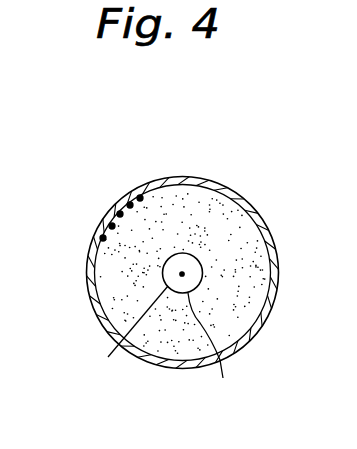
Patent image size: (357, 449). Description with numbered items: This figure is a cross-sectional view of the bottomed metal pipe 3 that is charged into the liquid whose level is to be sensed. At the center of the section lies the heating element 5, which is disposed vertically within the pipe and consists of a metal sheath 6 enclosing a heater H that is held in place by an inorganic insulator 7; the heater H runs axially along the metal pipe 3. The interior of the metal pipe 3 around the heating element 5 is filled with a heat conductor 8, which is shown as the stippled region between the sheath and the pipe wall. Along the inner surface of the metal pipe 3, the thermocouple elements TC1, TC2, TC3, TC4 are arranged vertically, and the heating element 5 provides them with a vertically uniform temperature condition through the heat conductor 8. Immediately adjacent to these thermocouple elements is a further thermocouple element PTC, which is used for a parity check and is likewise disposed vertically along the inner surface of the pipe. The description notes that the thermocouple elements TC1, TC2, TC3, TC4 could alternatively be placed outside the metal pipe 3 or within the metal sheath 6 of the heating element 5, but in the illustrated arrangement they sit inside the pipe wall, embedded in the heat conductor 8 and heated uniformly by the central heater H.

The metal pipe 3 is at (255, 199).
The heating element 5 is at (185, 273).
The metal sheath 6 is at (203, 279).
The inorganic insulator 7 is at (208, 348).
The heat conductor 8 is at (195, 209).
The heater H is at (108, 357).
The thermocouple element TC1 is at (100, 232).
The thermocouple element TC2 is at (111, 210).
The thermocouple element TC3 is at (120, 210).
The thermocouple element TC4 is at (133, 197).
The thermocouple element for parity check PTC is at (140, 191).